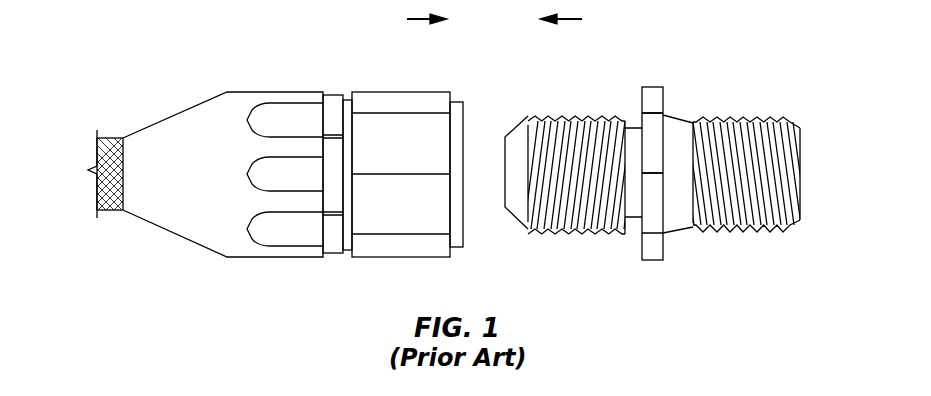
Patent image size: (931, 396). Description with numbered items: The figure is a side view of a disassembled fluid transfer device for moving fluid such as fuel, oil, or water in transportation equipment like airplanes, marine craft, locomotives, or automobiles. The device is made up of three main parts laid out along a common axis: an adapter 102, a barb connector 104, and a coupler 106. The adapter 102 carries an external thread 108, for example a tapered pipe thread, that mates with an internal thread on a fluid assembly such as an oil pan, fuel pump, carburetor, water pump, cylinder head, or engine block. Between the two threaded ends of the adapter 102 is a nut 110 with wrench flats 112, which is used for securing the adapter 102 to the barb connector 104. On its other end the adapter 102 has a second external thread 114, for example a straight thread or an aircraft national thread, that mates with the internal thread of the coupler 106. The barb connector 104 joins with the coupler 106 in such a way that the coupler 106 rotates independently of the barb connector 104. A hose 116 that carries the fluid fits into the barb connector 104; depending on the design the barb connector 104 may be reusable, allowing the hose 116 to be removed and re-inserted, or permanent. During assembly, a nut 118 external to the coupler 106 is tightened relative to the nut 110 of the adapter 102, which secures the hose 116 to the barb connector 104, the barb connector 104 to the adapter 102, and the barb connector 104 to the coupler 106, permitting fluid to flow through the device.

The adapter 102 is at (666, 182).
The barb connector 104 is at (206, 236).
The coupler 106 is at (408, 247).
The external thread 108 is at (757, 118).
The nut 110 is at (663, 97).
The wrench flats 112 is at (653, 138).
The external thread 114 is at (575, 223).
The hose 116 is at (110, 143).
The nut 118 is at (415, 147).